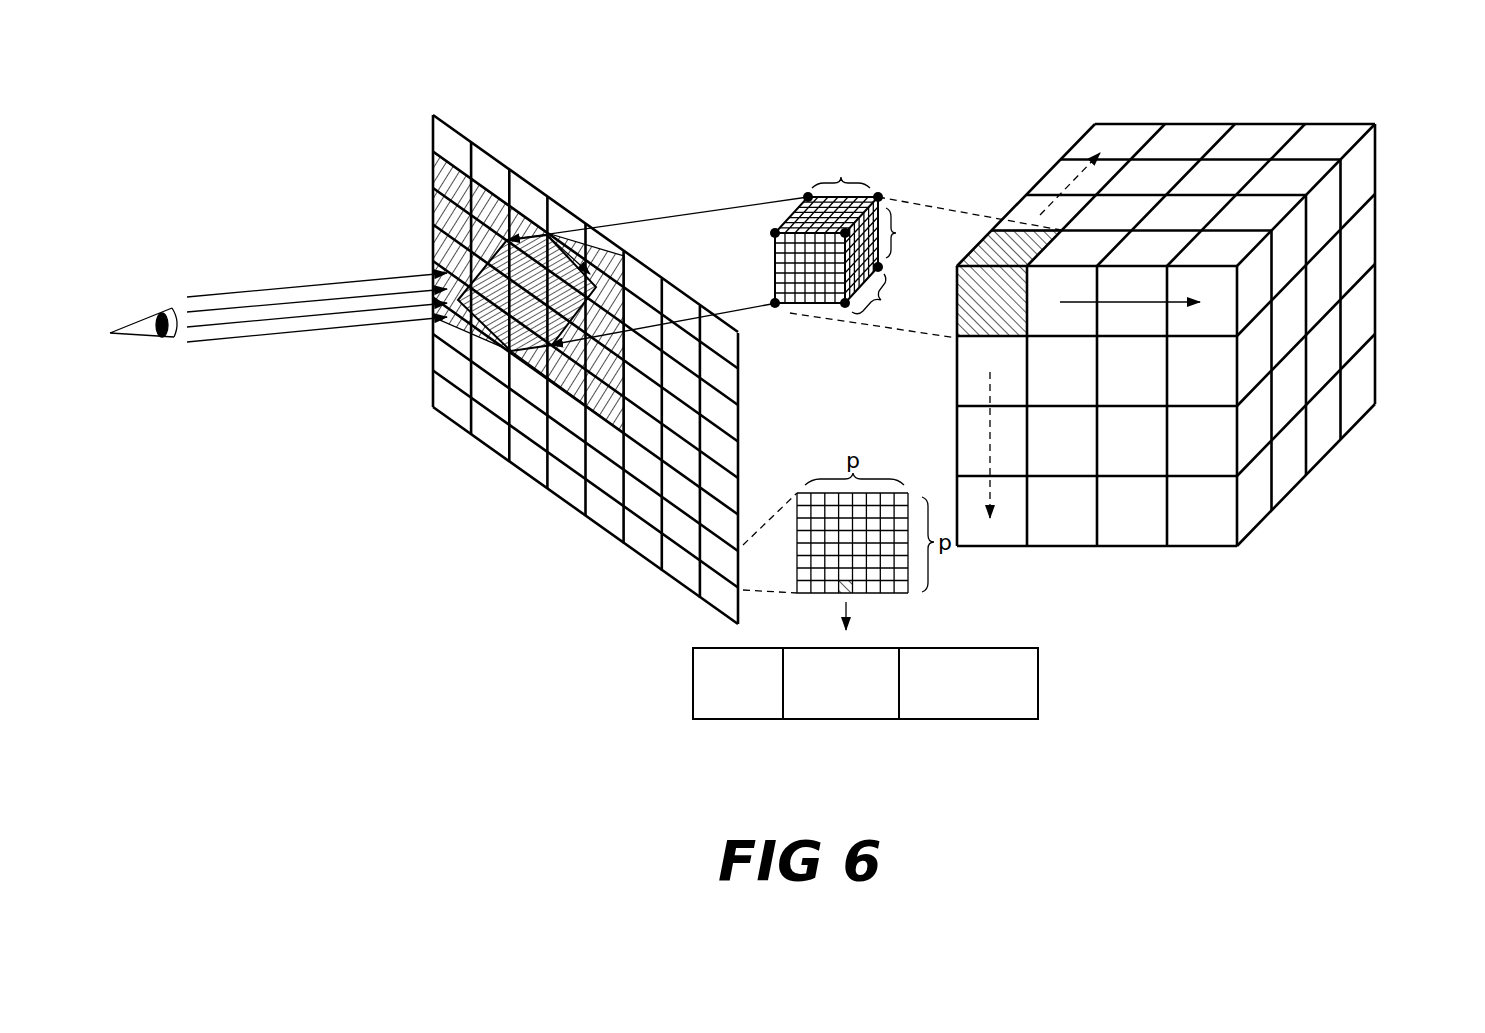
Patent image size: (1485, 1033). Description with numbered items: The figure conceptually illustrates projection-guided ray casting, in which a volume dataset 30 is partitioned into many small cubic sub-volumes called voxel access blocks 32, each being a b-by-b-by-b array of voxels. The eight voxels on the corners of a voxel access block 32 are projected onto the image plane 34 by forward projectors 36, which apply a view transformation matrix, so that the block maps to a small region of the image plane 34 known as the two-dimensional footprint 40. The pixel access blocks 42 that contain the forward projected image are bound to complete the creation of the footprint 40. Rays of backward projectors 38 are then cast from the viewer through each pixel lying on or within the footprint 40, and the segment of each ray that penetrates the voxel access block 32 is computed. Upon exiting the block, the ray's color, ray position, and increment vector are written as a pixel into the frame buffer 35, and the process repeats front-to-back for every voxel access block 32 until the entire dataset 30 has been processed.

The dataset 30 is at (1220, 335).
The voxel access block 32 is at (1362, 388).
The image plane 34 is at (566, 373).
The frame buffer 35 is at (1038, 682).
The forward projectors 36 is at (733, 216).
The backward projectors 38 is at (313, 272).
The 2D footprint 40 is at (424, 190).
The pixel access blocks 42 is at (572, 483).